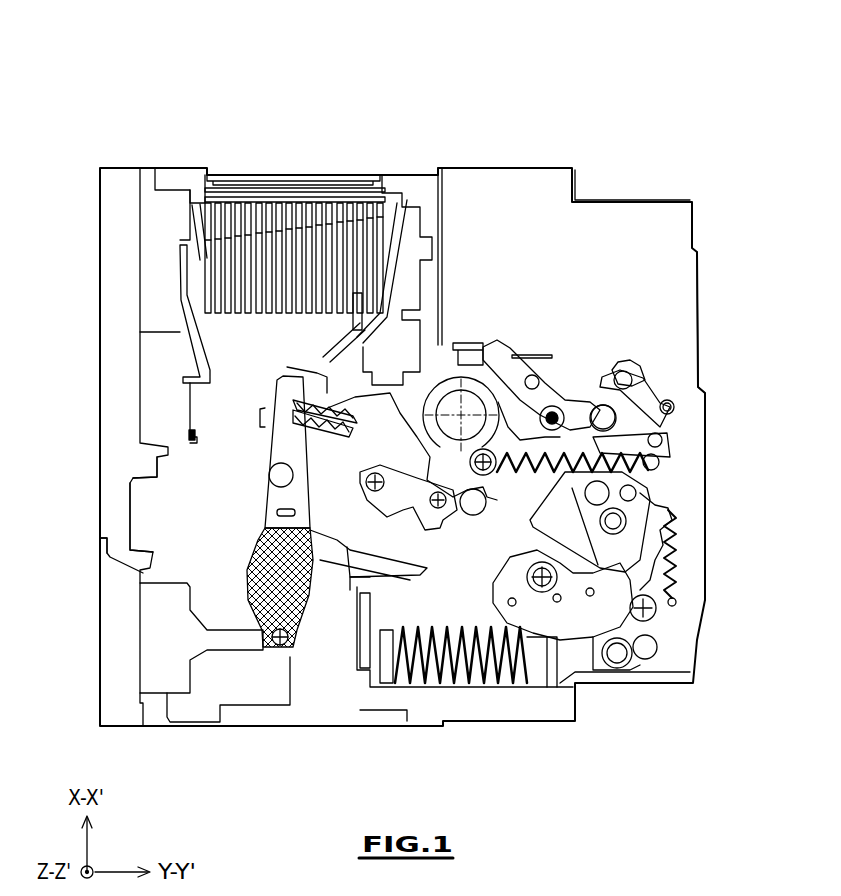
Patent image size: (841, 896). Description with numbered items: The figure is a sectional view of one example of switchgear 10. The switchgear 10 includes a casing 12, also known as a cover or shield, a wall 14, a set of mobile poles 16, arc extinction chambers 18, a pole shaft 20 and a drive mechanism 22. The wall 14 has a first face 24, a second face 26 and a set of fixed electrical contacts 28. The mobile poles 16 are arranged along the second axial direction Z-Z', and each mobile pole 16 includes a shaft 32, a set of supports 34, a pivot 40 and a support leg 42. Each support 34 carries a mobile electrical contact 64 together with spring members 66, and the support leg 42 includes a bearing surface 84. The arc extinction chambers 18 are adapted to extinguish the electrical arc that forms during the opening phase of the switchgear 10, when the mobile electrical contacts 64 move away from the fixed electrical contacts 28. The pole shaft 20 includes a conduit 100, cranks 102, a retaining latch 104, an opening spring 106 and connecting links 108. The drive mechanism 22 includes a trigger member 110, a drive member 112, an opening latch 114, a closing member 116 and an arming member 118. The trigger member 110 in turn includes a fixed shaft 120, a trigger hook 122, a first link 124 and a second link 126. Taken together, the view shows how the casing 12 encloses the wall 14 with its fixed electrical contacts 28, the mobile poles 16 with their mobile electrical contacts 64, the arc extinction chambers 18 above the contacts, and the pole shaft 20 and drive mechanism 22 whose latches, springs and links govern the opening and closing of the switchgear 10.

The switchgear 10 is at (102, 88).
The casing 12 is at (535, 168).
The wall 14 is at (118, 247).
The mobile pole 16 is at (190, 513).
The arc extinction chamber 18 is at (313, 217).
The pole shaft 20 is at (455, 385).
The drive mechanism 22 is at (668, 283).
The first face 24 is at (158, 478).
The second face 26 is at (100, 297).
The fixed electrical contact 28 is at (199, 440).
The shaft 32 is at (273, 482).
The support 34 is at (280, 390).
The pivot 40 is at (272, 655).
The support leg 42 is at (150, 610).
The mobile electrical contact 64 is at (258, 418).
The spring members 66 is at (332, 345).
The bearing surface 84 is at (140, 652).
The conduit 100 is at (465, 410).
The crank 102 is at (441, 385).
The retaining latch 104 is at (660, 465).
The opening spring 106 is at (660, 440).
The connecting link 108 is at (483, 530).
The trigger member 110 is at (528, 412).
The drive member 112 is at (677, 530).
The opening latch 114 is at (625, 372).
The closing member 116 is at (657, 393).
The arming member 118 is at (573, 620).
The fixed shaft 120 is at (553, 630).
The trigger hook 122 is at (502, 645).
The first link 124 is at (673, 590).
The second link 126 is at (632, 470).